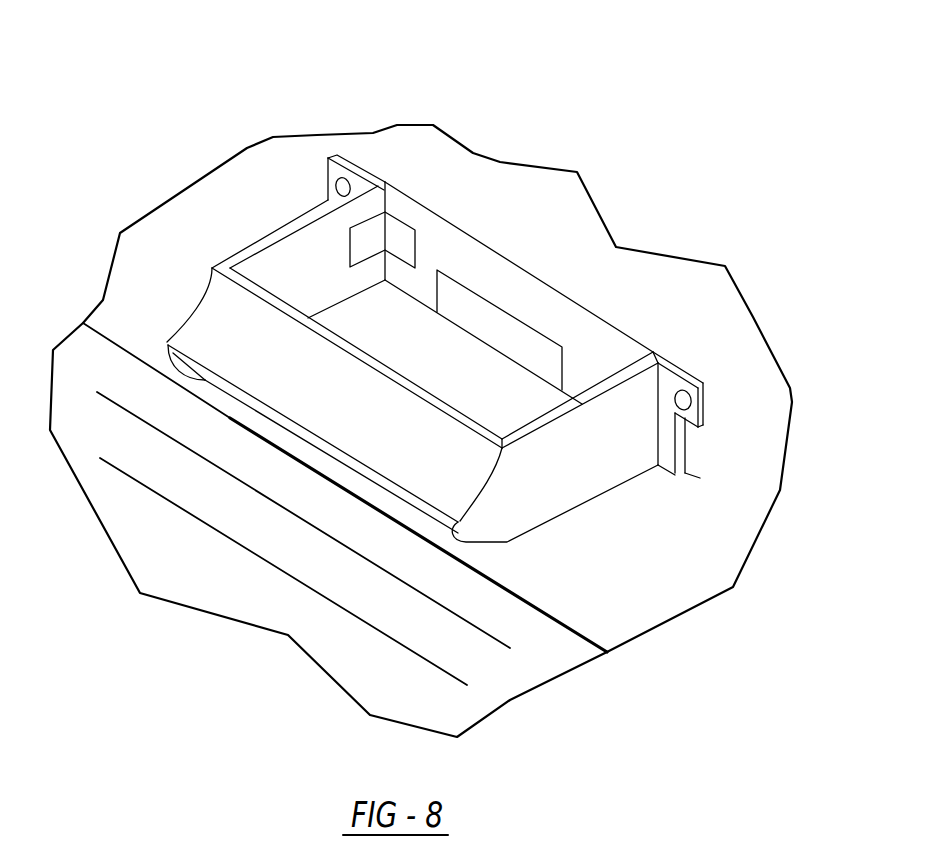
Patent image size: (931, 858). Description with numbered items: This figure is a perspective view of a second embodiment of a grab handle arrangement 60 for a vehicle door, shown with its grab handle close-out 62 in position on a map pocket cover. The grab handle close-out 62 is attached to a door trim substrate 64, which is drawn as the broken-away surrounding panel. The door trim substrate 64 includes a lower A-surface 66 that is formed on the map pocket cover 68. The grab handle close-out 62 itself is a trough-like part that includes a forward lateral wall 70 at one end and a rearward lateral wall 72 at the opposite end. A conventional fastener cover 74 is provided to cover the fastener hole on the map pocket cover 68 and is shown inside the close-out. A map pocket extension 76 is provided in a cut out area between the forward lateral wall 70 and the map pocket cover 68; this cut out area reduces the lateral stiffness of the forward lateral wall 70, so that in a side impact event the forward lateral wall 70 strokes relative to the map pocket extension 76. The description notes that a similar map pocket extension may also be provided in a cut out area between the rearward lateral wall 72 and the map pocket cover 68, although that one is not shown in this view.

The grab handle arrangement 60 is at (220, 660).
The grab handle close-out 62 is at (310, 250).
The door trim substrate 64 is at (748, 472).
The lower A-surface 66 is at (407, 343).
The map pocket cover 68 is at (608, 350).
The forward lateral wall 70 is at (272, 270).
The rearward lateral wall 72 is at (583, 463).
The fastener cover 74 is at (505, 333).
The map pocket extension 76 is at (400, 240).